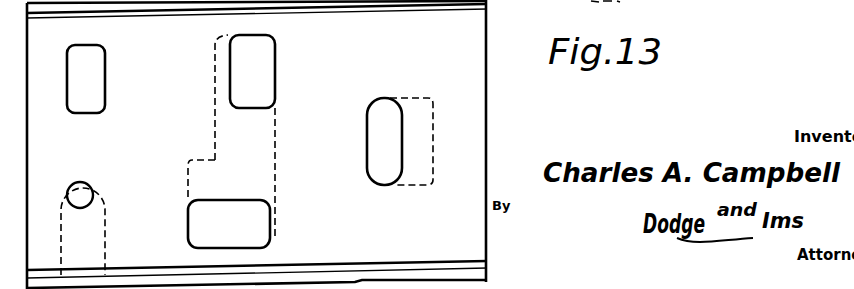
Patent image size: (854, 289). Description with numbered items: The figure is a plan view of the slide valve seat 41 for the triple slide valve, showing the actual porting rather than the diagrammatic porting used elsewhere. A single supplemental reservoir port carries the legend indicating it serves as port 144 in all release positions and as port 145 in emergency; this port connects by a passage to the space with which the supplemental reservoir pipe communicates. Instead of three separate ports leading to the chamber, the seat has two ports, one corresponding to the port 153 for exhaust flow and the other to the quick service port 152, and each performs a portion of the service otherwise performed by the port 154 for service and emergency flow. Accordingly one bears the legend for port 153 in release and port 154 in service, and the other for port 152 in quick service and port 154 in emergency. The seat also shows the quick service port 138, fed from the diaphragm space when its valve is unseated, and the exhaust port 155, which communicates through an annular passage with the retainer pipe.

The exhaust port 155 is at (99, 80).
The quick service port 138 is at (83, 195).
The port for exhaust flow 153 is at (265, 63).
The port for service and emergency flow 154 is at (335, 138).
The quick service port 152 is at (253, 223).
The slide valve seat 41 is at (468, 42).
The supplemental reservoir port 144 is at (396, 147).
The supplemental reservoir port 145 is at (589, 139).